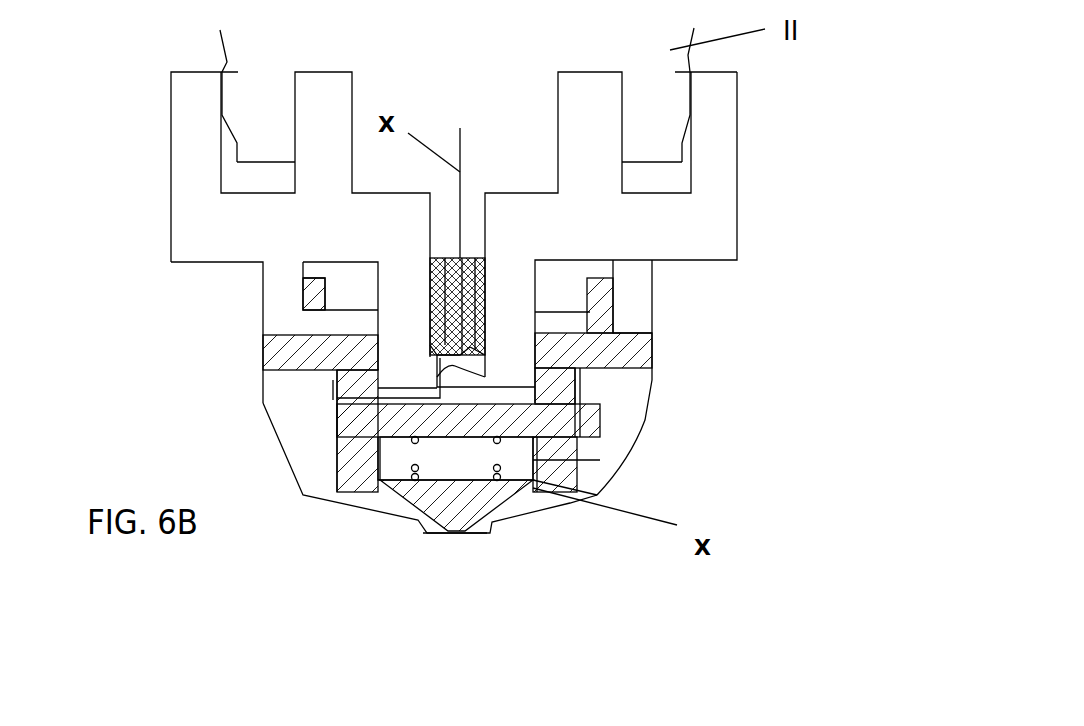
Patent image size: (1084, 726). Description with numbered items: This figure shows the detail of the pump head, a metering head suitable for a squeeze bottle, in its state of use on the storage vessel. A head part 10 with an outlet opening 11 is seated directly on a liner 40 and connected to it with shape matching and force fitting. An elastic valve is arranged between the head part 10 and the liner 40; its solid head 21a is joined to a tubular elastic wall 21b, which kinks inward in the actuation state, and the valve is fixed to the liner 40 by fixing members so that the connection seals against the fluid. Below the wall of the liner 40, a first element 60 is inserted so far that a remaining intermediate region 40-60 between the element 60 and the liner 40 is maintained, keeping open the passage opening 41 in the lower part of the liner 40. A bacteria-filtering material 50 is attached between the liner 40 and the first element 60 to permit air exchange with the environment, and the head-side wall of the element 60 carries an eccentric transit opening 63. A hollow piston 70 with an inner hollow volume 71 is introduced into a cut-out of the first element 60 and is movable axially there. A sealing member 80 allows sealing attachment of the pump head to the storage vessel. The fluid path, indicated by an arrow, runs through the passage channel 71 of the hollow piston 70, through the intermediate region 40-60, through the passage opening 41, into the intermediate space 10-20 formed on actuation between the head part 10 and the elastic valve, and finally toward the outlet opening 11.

The sealing member 80 is at (253, 183).
The first element 60 is at (710, 197).
The inner hollow volume 71 is at (466, 238).
The hollow piston 70 is at (477, 302).
The head part 10 is at (620, 420).
The material 50 is at (338, 323).
The transit opening 63 is at (427, 375).
The liner 40 is at (632, 353).
The intermediate space 40-60 is at (581, 412).
The passage opening 41 is at (328, 397).
The elastic wall 21b is at (532, 460).
The head 21a is at (442, 500).
The outlet opening 11 is at (464, 538).
The intermediate space 10-20 is at (523, 498).